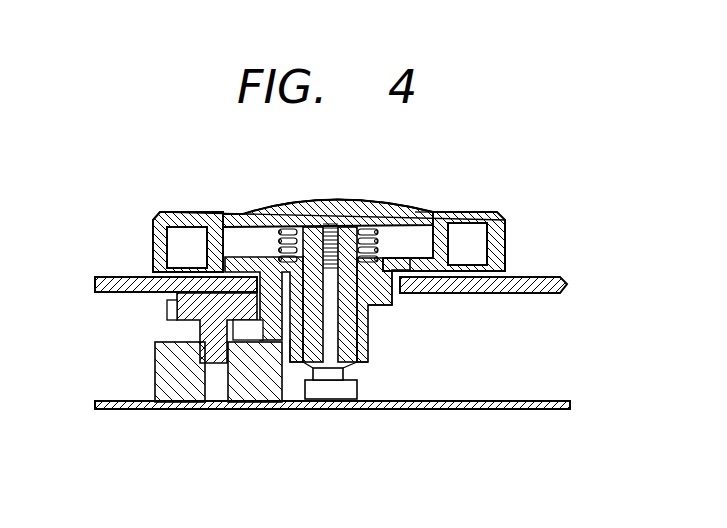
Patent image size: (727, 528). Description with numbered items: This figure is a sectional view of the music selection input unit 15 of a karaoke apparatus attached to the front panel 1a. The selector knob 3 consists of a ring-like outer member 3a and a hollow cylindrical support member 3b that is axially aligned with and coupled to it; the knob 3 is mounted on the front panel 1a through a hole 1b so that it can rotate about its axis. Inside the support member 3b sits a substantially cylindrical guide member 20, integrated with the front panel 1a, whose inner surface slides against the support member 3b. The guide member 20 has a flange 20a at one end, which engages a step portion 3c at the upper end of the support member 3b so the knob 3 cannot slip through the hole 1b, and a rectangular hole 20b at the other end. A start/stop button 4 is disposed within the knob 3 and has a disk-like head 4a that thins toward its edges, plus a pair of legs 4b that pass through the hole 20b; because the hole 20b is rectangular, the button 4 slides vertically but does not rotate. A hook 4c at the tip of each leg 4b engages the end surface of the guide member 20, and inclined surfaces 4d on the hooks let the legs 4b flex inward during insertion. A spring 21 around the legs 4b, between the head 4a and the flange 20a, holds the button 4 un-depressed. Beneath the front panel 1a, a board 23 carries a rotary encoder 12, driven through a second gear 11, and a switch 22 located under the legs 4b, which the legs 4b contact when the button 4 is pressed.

The front panel 1a is at (572, 293).
The hole 1b is at (265, 262).
The selector knob 3 is at (506, 238).
The outer member 3a is at (153, 240).
The support member 3b is at (404, 284).
The step portion 3c is at (443, 214).
The start/stop button 4 is at (376, 212).
The head 4a is at (327, 200).
The legs 4b is at (372, 329).
The hook 4c is at (298, 363).
The inclined surfaces 4d is at (306, 392).
The second gear 11 is at (170, 312).
The rotary encoder 12 is at (162, 362).
The music selection input unit 15 is at (510, 192).
The guide member 20 is at (362, 348).
The flange 20a is at (290, 210).
The hole 20b is at (345, 380).
The spring 21 is at (425, 212).
The switch 22 is at (331, 401).
The board 23 is at (166, 409).